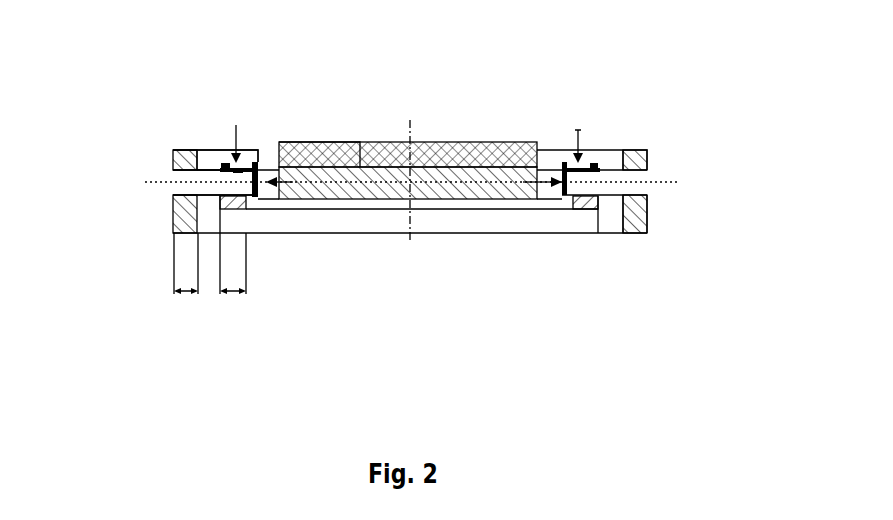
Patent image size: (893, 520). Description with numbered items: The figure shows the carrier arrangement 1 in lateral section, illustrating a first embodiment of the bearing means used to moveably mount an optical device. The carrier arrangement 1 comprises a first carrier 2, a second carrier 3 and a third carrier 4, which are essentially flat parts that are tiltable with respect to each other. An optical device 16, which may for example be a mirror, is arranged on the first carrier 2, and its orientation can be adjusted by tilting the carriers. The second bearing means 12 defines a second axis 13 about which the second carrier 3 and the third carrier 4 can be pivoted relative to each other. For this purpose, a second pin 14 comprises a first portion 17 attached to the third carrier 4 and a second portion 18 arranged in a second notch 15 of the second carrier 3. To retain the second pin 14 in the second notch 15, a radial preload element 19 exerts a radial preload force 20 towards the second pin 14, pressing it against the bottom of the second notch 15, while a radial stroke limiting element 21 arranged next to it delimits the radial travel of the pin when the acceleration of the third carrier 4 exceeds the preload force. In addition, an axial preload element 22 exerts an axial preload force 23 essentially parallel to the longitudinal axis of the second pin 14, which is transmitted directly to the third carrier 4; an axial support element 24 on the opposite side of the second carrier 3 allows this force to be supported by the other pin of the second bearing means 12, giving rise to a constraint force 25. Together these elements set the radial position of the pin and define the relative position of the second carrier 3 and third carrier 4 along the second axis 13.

The carrier arrangement 1 is at (670, 40).
The first carrier 2 is at (512, 202).
The second carrier 3 is at (582, 208).
The third carrier 4 is at (647, 233).
The second bearing means 12 is at (147, 116).
The second axis 13 is at (148, 183).
The second pin 14 is at (172, 178).
The second notch 15 is at (257, 207).
The optical device 16 is at (466, 148).
The first portion 17 is at (186, 296).
The second portion 18 is at (236, 296).
The radial preload element 19 is at (245, 166).
The radial preload force 20 is at (236, 125).
The radial stroke limiting element 21 is at (226, 162).
The axial preload element 22 is at (258, 160).
The axial preload force 23 is at (320, 150).
The axial support element 24 is at (560, 160).
The constraint force 25 is at (505, 166).